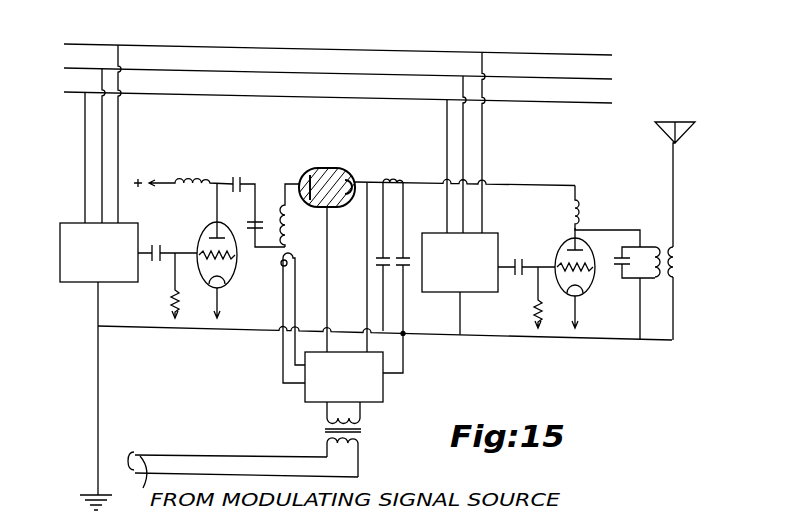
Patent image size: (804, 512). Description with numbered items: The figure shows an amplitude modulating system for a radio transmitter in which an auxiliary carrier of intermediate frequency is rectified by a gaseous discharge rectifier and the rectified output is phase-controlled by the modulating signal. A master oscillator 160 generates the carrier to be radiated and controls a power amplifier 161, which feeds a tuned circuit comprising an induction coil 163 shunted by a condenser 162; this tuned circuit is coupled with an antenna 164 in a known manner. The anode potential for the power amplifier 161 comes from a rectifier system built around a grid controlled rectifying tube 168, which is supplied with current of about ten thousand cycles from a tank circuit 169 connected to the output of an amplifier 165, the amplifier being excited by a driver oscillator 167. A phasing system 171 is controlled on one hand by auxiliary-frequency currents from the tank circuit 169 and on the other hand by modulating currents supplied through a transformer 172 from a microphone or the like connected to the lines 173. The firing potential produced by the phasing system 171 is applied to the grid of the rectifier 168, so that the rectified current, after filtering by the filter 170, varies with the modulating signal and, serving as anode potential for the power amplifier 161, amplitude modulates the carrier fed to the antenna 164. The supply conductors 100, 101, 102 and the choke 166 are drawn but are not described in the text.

The power supply bus 100 is at (351, 101).
The power supply bus 101 is at (351, 77).
The power supply bus 102 is at (351, 53).
The master oscillator 160 is at (486, 233).
The power amplifier 161 is at (590, 252).
The condenser 162 is at (627, 266).
The induction coil 163 is at (656, 247).
The antenna 164 is at (680, 142).
The amplifier 165 is at (226, 224).
The choke coil 166 is at (210, 170).
The driver oscillator 167 is at (60, 236).
The grid controlled rectifying tube 168 is at (314, 170).
The tank circuit 169 is at (262, 218).
The filter 170 is at (393, 276).
The phasing system 171 is at (383, 392).
The transformer 172 is at (362, 431).
The lines 173 is at (229, 464).